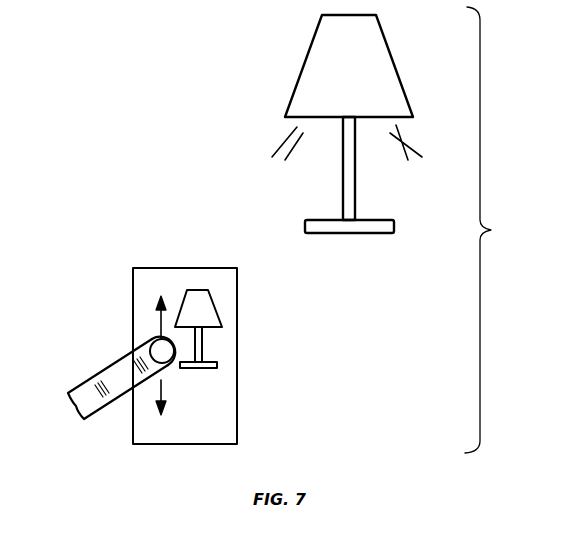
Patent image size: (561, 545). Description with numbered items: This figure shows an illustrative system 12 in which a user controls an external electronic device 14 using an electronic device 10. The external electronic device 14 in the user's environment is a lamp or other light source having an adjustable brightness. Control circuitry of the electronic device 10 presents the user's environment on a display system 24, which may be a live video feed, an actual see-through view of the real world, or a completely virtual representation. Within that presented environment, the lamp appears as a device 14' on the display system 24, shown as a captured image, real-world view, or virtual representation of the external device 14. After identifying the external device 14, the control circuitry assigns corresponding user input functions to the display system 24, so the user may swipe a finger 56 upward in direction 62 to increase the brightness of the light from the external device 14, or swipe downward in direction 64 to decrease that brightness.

The electronic device 10 is at (237, 385).
The system 12 is at (490, 230).
The external electronic device 14 is at (364, 124).
The device representation on display system 14' is at (236, 329).
The display system 24 is at (218, 278).
The finger 56 is at (112, 375).
The upward swipe direction 62 is at (160, 316).
The downward swipe direction 64 is at (162, 398).